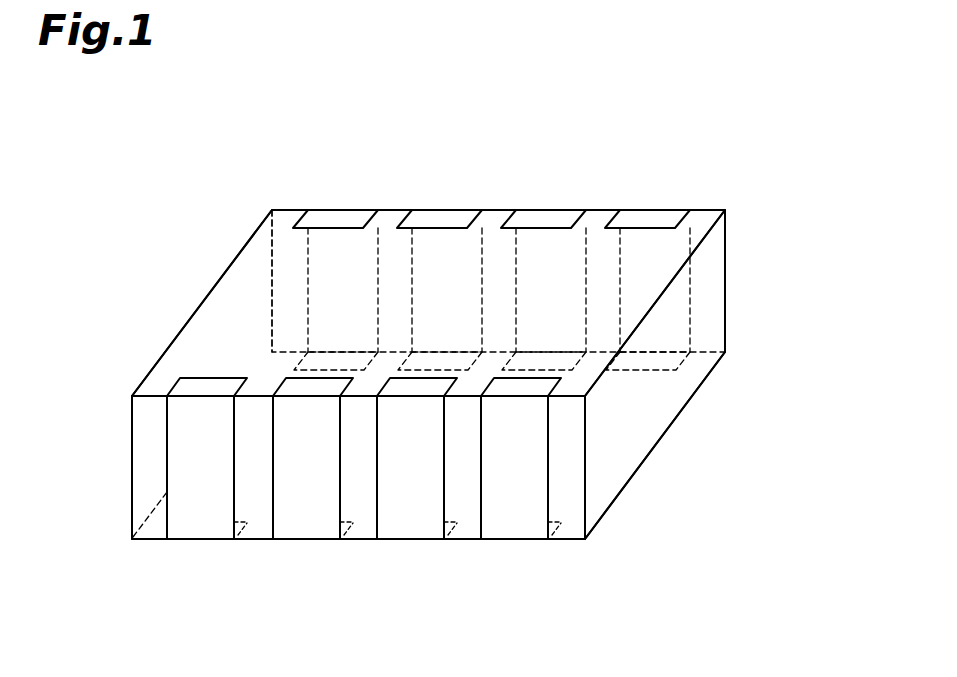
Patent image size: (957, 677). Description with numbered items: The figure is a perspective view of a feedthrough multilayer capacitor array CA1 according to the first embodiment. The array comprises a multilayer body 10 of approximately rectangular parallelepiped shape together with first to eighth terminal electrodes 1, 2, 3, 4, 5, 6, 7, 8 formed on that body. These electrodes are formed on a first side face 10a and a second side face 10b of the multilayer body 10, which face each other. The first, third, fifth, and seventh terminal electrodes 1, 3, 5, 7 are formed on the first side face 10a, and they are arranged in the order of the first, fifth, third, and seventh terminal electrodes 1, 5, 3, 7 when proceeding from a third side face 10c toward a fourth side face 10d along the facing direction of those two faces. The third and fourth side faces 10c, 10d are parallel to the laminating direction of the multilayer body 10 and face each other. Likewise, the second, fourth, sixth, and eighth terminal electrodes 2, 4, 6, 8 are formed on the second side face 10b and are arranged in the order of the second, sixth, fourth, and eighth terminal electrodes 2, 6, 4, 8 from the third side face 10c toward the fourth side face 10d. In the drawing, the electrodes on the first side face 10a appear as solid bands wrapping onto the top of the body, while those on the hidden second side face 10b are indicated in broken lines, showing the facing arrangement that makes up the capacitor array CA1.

The first terminal electrode 1 is at (202, 530).
The second terminal electrode 2 is at (335, 219).
The third terminal electrode 3 is at (413, 530).
The fourth terminal electrode 4 is at (543, 219).
The fifth terminal electrode 5 is at (307, 530).
The sixth terminal electrode 6 is at (440, 219).
The seventh terminal electrode 7 is at (515, 530).
The eighth terminal electrode 8 is at (648, 219).
The multilayer body 10 is at (130, 468).
The first side face 10a is at (358, 505).
The second side face 10b is at (708, 278).
The third side face 10c is at (253, 268).
The fourth side face 10d is at (708, 325).
The feedthrough multilayer capacitor array CA1 is at (749, 140).